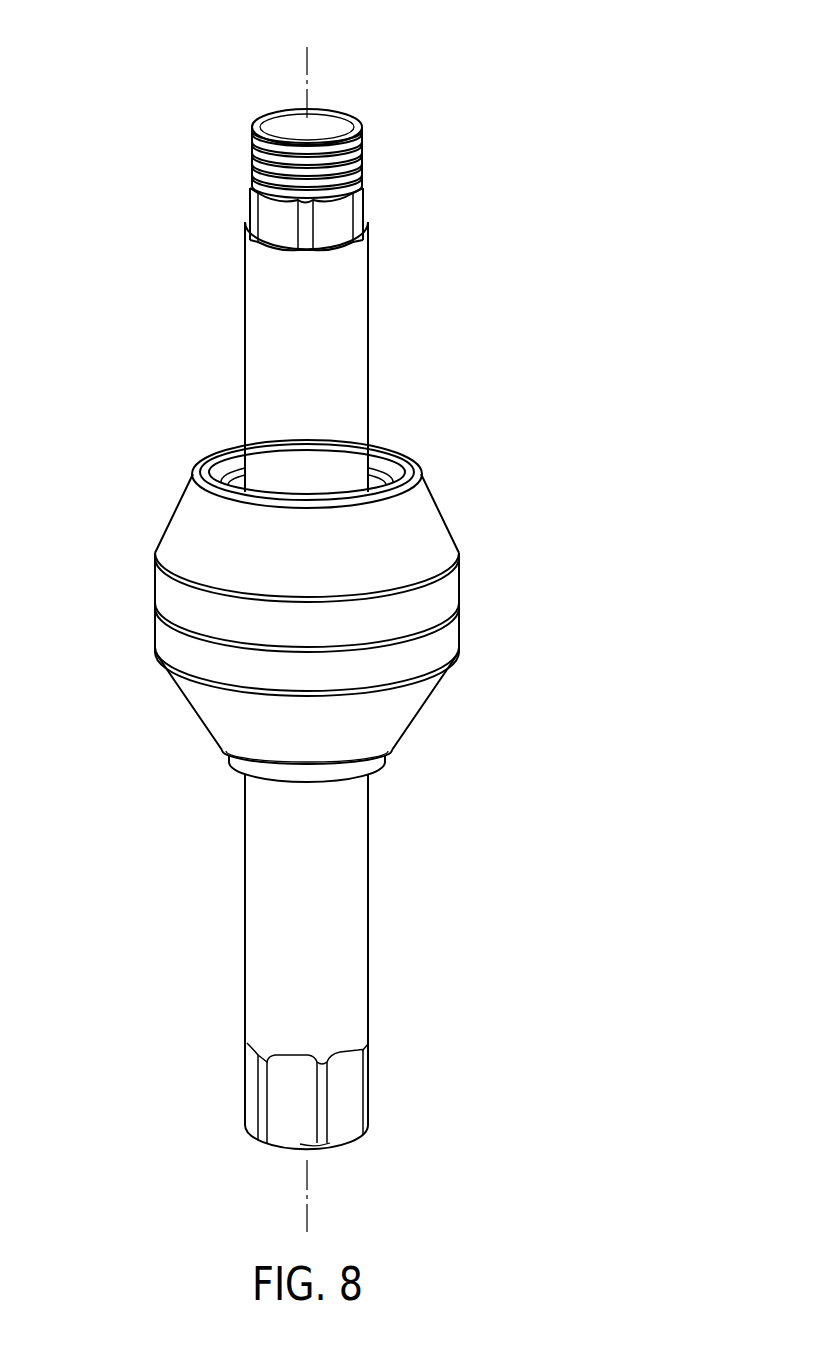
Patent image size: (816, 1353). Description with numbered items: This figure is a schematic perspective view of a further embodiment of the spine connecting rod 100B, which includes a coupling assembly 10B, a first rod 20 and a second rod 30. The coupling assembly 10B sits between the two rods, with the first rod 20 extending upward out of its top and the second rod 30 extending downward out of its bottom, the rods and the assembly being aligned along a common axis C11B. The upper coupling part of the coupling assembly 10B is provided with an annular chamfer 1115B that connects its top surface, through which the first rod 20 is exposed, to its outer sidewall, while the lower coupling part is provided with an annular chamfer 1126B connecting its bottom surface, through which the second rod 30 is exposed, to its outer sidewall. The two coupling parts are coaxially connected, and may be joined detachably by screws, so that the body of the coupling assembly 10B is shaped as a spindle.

The spine connecting rod 100B is at (157, 63).
The central axis (C20, C30) C11B is at (371, 618).
The first rod 20 is at (245, 325).
The second rod 30 is at (245, 925).
The coupling assembly 10B is at (200, 457).
The annular chamfer 1115B is at (178, 520).
The annular chamfer 1126B is at (187, 700).